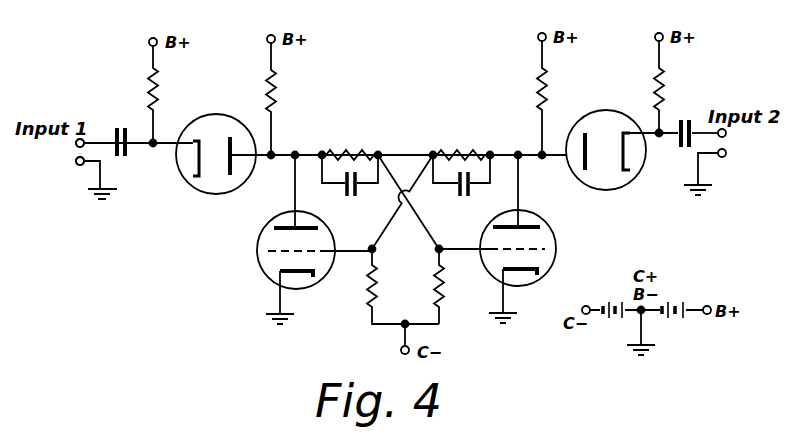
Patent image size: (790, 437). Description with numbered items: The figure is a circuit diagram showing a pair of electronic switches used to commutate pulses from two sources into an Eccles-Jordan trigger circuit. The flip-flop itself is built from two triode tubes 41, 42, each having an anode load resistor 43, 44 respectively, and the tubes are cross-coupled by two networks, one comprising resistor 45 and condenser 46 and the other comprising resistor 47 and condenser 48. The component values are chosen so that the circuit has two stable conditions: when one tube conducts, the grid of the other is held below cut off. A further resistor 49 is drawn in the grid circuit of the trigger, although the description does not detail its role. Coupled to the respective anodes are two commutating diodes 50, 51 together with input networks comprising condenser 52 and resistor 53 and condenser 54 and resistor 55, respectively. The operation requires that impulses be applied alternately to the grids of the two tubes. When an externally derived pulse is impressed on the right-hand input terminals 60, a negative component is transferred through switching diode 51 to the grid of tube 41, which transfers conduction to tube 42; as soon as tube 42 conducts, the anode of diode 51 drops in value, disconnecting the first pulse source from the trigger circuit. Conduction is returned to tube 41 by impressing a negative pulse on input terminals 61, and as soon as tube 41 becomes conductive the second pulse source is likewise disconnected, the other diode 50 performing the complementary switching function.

The triode tube 41 is at (257, 268).
The triode tube 42 is at (557, 252).
The anode load resistor 43 is at (276, 92).
The anode load resistor 44 is at (547, 92).
The resistor 45 is at (380, 152).
The condenser 46 is at (355, 198).
The resistor 47 is at (470, 152).
The condenser 48 is at (465, 198).
The grid bias resistor 49 is at (444, 296).
The commutating diode 50 is at (208, 192).
The commutating diode 51 is at (611, 192).
The condenser 52 is at (120, 158).
The resistor 53 is at (158, 92).
The condenser 54 is at (684, 150).
The resistor 55 is at (664, 92).
The input terminals 60 is at (727, 150).
The input terminals 61 is at (76, 164).